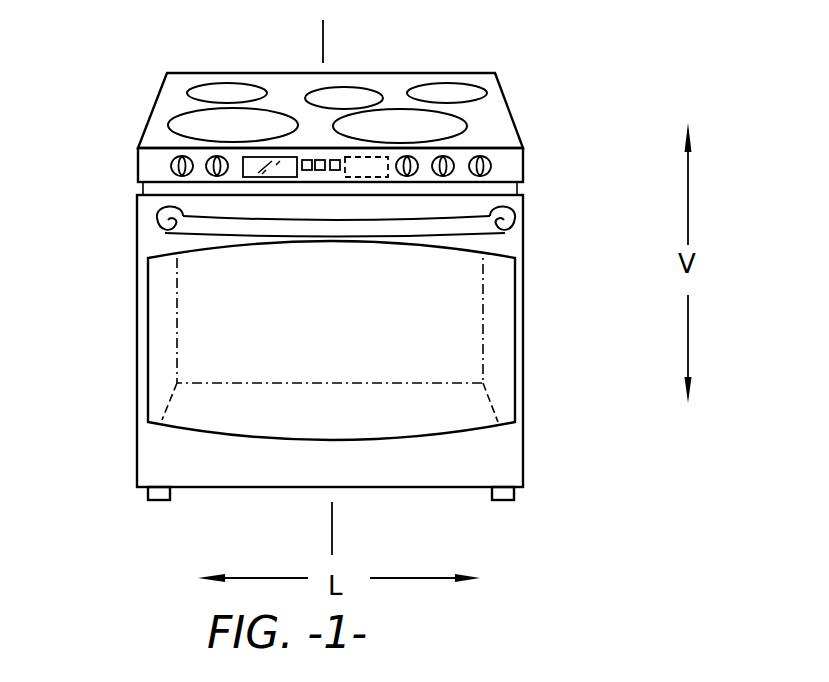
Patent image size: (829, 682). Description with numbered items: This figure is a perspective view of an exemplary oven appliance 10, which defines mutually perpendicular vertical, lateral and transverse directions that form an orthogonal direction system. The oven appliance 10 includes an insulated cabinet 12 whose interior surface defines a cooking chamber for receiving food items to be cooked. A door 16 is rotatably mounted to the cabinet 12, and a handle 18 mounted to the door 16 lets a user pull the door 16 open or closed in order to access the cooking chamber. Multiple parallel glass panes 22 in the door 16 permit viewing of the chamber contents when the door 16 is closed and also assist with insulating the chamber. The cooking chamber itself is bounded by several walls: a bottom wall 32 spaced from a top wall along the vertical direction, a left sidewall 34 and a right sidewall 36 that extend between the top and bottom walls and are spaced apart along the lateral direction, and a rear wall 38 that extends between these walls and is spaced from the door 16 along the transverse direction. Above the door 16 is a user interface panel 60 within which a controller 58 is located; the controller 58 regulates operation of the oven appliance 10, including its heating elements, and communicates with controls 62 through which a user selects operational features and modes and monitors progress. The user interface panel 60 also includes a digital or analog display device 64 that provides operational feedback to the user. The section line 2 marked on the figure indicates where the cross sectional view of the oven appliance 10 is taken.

The oven appliance 10 is at (540, 62).
The cabinet 12 is at (156, 188).
The door 16 is at (512, 202).
The handle 18 is at (183, 223).
The glass panes 22 is at (495, 380).
The bottom wall 32 is at (395, 428).
The left sidewall 34 is at (162, 313).
The right sidewall 36 is at (497, 327).
The rear wall 38 is at (453, 275).
The controller 58 is at (372, 157).
The user interface panel 60 is at (544, 160).
The controls 62 is at (320, 172).
The display device 64 is at (262, 177).
The section line 2 is at (347, 32).